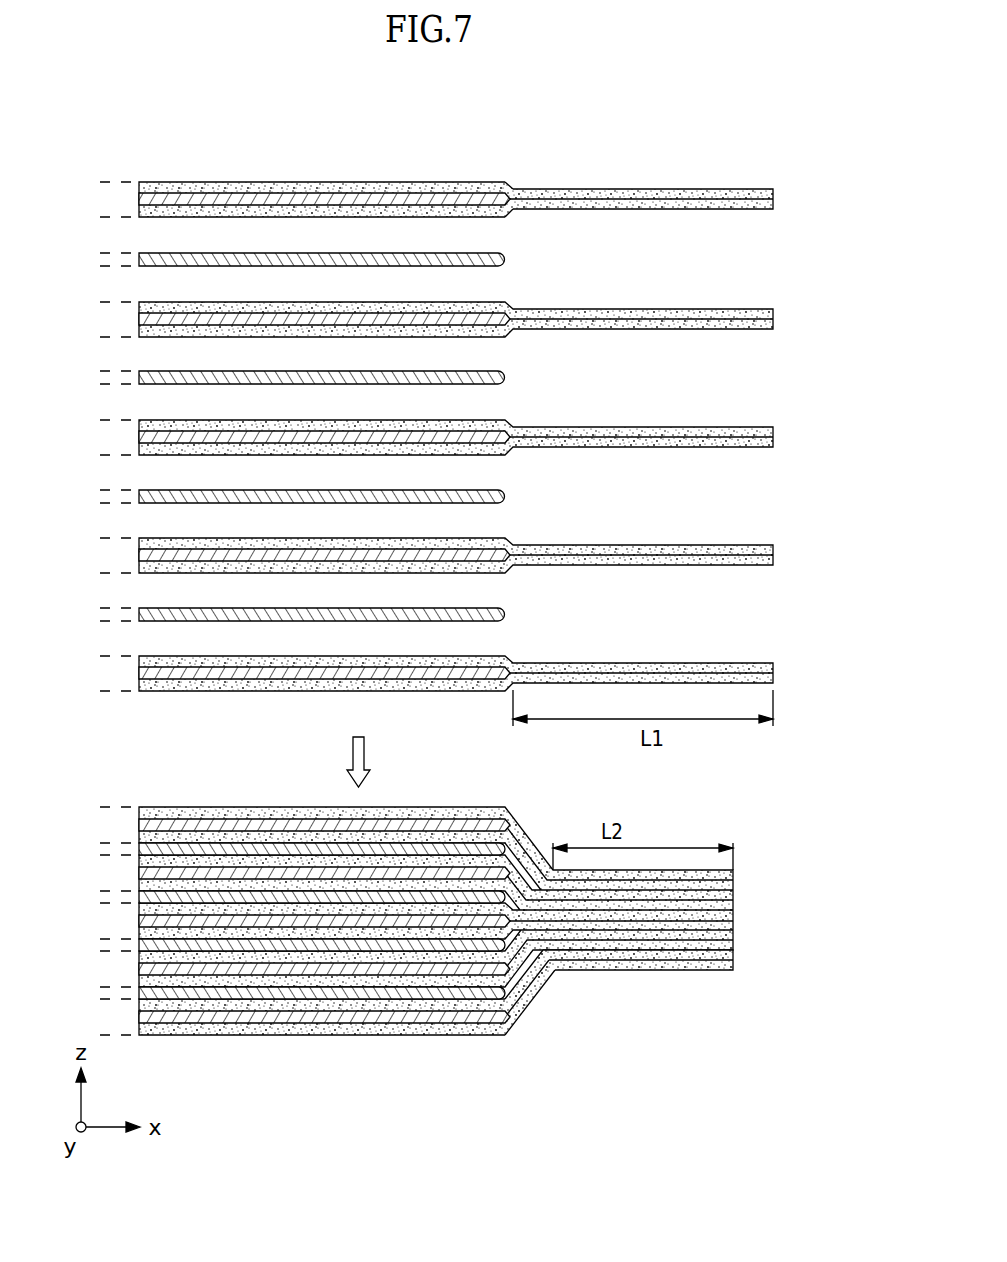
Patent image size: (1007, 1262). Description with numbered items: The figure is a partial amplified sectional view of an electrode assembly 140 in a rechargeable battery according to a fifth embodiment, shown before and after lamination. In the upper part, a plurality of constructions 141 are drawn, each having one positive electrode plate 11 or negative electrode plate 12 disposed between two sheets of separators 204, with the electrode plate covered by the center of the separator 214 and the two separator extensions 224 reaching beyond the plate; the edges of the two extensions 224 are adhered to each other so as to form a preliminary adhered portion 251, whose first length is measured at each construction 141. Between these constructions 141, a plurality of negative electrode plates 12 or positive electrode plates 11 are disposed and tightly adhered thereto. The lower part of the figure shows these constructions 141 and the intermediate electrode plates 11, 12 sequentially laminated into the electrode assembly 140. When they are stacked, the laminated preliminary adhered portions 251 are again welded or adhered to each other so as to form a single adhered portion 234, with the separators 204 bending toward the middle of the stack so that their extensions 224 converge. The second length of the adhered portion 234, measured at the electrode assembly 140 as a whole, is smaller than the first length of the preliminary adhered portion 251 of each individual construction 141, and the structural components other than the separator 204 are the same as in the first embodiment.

The positive electrode plate 11 is at (181, 199).
The negative electrode plate 12 is at (504, 259).
The electrode assembly 140 is at (222, 1038).
The construction 141 is at (267, 182).
The separator 204 is at (456, 603).
The center of the separator 214 is at (440, 183).
The extension of the separator 224 is at (509, 178).
The adhered portion 234 is at (638, 1024).
The preliminary adhered portion 251 is at (593, 190).